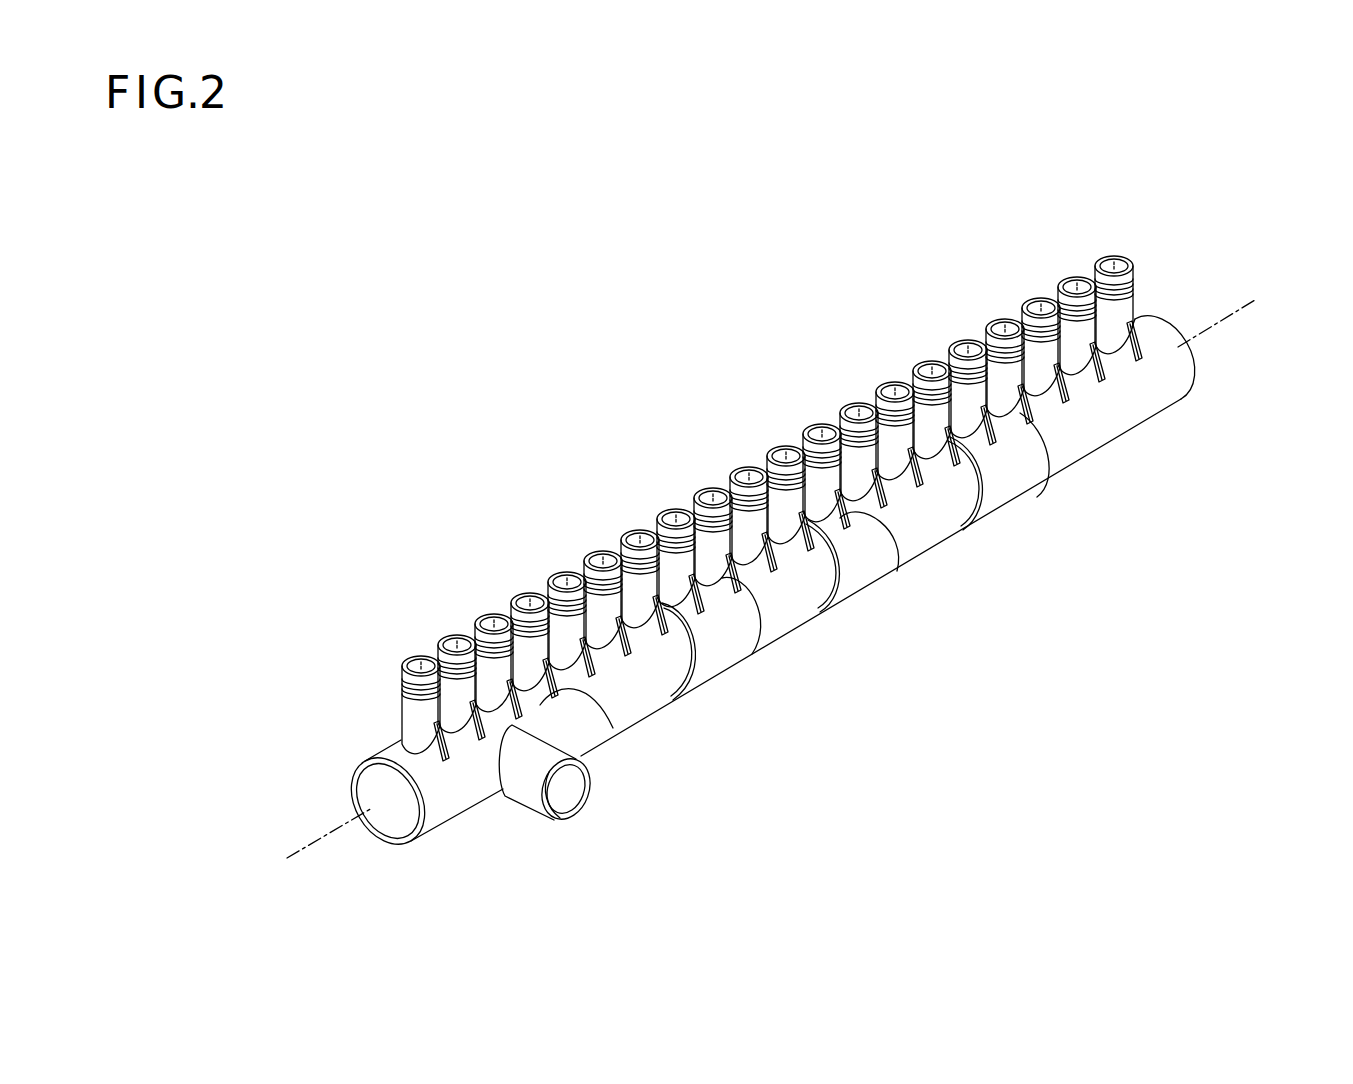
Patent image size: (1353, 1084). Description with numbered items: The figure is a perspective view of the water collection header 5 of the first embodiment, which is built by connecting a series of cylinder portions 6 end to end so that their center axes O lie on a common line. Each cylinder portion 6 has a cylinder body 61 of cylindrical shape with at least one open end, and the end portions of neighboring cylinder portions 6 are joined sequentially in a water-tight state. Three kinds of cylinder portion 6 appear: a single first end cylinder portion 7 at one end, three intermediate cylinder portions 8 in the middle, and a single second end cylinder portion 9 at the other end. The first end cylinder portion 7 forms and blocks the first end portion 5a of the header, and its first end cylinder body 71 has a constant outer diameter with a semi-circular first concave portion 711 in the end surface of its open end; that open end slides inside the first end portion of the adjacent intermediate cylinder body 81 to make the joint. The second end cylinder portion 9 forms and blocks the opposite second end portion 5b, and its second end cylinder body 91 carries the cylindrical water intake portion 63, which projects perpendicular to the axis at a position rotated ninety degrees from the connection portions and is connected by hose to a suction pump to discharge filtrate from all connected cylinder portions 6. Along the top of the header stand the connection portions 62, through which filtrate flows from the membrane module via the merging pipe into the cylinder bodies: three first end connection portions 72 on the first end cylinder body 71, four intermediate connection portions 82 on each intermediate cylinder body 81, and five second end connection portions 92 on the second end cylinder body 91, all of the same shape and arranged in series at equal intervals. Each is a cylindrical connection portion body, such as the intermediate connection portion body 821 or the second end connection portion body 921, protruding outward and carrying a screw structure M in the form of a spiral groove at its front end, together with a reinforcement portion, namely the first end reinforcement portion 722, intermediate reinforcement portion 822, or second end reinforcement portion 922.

The water collection header 5 is at (1106, 217).
The first end portion 5a is at (1183, 348).
The second end portion 5b is at (383, 802).
The center axis O is at (1250, 314).
The cylinder portion 6 is at (782, 557).
The cylinder body 61 is at (773, 620).
The connection portion 62 is at (767, 466).
The first end cylinder portion 7 is at (1170, 420).
The first end cylinder body 71 is at (1125, 408).
The first concave portion 711 is at (1126, 308).
The first end connection portion 72 is at (1114, 269).
The first end reinforcement portion 722 is at (1136, 340).
The intermediate cylinder portion 8 is at (648, 722).
The intermediate cylinder body 81 is at (655, 677).
The intermediate connection portion body 821 is at (672, 702).
The intermediate connection portion 82 is at (713, 501).
The intermediate reinforcement portion 822 is at (587, 660).
The second end cylinder portion 9 is at (452, 830).
The second end cylinder body 91 is at (475, 780).
The second end connection portion body 921 is at (404, 712).
The second end connection portion 92 is at (567, 585).
The second end reinforcement portion 922 is at (433, 762).
The water intake portion 63 is at (568, 812).
The screw structure M is at (403, 684).